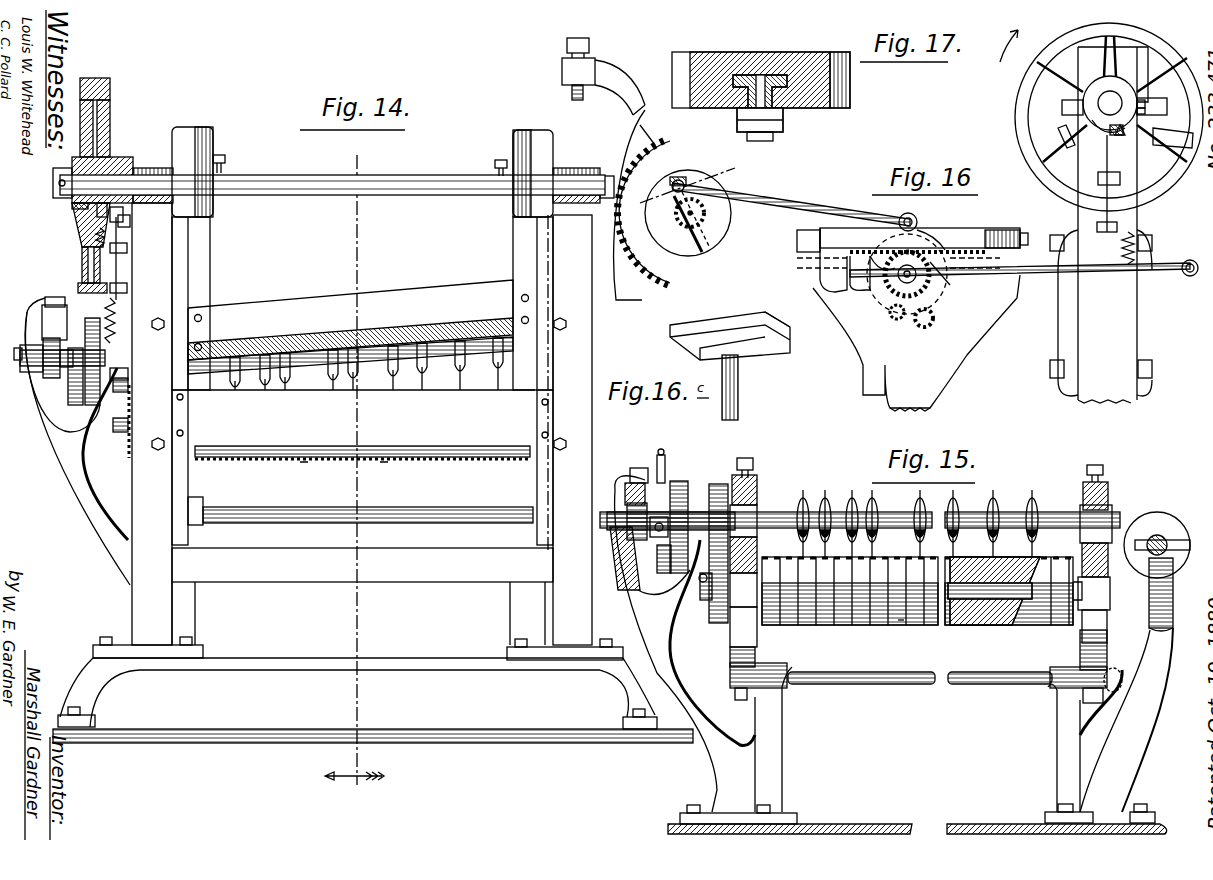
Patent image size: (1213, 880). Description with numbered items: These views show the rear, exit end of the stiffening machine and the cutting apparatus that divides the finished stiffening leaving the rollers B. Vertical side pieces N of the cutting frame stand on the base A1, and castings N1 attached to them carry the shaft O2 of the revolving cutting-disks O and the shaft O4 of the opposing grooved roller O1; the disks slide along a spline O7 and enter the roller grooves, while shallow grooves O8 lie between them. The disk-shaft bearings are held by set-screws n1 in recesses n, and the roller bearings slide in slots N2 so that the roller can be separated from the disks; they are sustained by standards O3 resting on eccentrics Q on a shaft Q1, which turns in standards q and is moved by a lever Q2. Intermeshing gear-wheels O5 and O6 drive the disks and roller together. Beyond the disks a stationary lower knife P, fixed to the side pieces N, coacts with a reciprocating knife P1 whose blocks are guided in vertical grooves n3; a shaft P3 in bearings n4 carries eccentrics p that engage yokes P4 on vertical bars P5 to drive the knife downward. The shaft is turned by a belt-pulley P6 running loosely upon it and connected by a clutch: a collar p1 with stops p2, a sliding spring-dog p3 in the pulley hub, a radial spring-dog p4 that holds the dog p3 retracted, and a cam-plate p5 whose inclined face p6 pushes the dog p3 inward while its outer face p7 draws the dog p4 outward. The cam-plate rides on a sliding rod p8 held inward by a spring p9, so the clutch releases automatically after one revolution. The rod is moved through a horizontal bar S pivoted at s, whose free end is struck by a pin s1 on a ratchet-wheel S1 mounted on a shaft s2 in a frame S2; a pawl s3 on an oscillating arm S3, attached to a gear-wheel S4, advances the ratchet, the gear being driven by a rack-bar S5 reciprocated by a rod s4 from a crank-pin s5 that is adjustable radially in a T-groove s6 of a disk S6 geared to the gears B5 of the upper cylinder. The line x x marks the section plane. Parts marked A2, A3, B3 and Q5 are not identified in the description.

In FIG. 14, the lower knife P is at (361, 367).
In FIG. 14, the reciprocating knife P1 is at (350, 320).
In FIG. 14, the shaft P3 is at (303, 185).
In FIG. 14, the yokes P4 is at (182, 138).
In FIG. 14, the vertical bars P5 is at (186, 256).
In FIG. 14, the belt-pulley P6 is at (108, 114).
In FIG. 17, the belt-pulley P6 is at (1012, 104).
In FIG. 14, the eccentrics p is at (214, 156).
In FIG. 14, the collar p1 is at (122, 165).
In FIG. 16C, the collar p1 is at (744, 352).
In FIG. 17, the collar p1 is at (1072, 112).
In FIG. 17, the stops p2 is at (1082, 142).
In FIG. 14, the sliding spring-dog p3 is at (72, 205).
In FIG. 17, the sliding spring-dog p3 is at (1146, 103).
In FIG. 14, the radially-movable spring-dog p4 is at (97, 215).
In FIG. 17, the radially-movable spring-dog p4 is at (1150, 113).
In FIG. 14, the cam-plate p5 is at (125, 213).
In FIG. 16C, the cam-plate p5 is at (781, 356).
In FIG. 17, the cam-plate p5 is at (1101, 142).
In FIG. 14, the laterally-inclined cam-face p6 is at (98, 229).
In FIG. 16C, the laterally-inclined cam-face p6 is at (717, 328).
In FIG. 17, the laterally-inclined cam-face p6 is at (1125, 152).
In FIG. 14, the outer inclined cam-face p7 is at (128, 225).
In FIG. 17, the outer inclined cam-face p7 is at (1142, 125).
In FIG. 14, the sliding rod p8 is at (92, 263).
In FIG. 16C, the sliding rod p8 is at (740, 404).
In FIG. 17, the sliding rod p8 is at (1110, 115).
In FIG. 14, the spring p9 is at (121, 318).
In FIG. 17, the spring p9 is at (1132, 255).
In FIG. 14, the vertical side pieces N is at (362, 424).
In FIG. 17, the vertical side pieces N is at (1145, 173).
In FIG. 15, the side castings N1 is at (757, 499).
In FIG. 16, the slots N2 is at (928, 320).
In FIG. 16, the recesses n is at (867, 255).
In FIG. 15, the set-screws n1 is at (745, 458).
In FIG. 14, the vertical grooves n3 is at (140, 378).
In FIG. 14, the bearings n4 is at (148, 172).
In FIG. 14, the cutting-disks O is at (327, 381).
In FIG. 15, the cutting-disks O is at (965, 547).
In FIG. 14, the grooved roller O1 is at (518, 458).
In FIG. 15, the grooved roller O1 is at (921, 610).
In FIG. 14, the disk shaft O2 is at (442, 354).
In FIG. 15, the disk shaft O2 is at (1003, 522).
In FIG. 14, the standards O3 is at (114, 444).
In FIG. 15, the standards O3 is at (1160, 540).
In FIG. 15, the roller shaft O4 is at (780, 519).
In FIG. 15, the gear-wheel O5 is at (860, 640).
In FIG. 14, the gear-wheel O6 is at (394, 463).
In FIG. 15, the gear-wheel O6 is at (960, 628).
In FIG. 14, the spline O7 is at (488, 346).
In FIG. 15, the spline O7 is at (877, 521).
In FIG. 15, the shallow grooves O8 is at (990, 622).
In FIG. 15, the eccentrics Q is at (735, 657).
In FIG. 14, the eccentric shaft Q1 is at (274, 512).
In FIG. 15, the eccentric shaft Q1 is at (898, 676).
In FIG. 15, the actuating-lever Q2 is at (1123, 662).
In FIG. 15, the gear wheel Q5 is at (720, 488).
In FIG. 14, the standards q is at (358, 621).
In FIG. 15, the standards q is at (926, 726).
In FIG. 14, the base A1 is at (295, 665).
In FIG. 15, the base A1 is at (917, 816).
In FIG. 14, the pedestal A2 is at (96, 700).
In FIG. 14, the curved arm A3 is at (613, 95).
In FIG. 14, the rollers B is at (627, 240).
In FIG. 14, the bolt B3 is at (590, 50).
In FIG. 14, the gears B5 is at (645, 158).
In FIG. 14, the pivoted bar S is at (690, 213).
In FIG. 17, the pivoted bar S is at (1020, 281).
In FIG. 15, the pivoted bar S is at (665, 535).
In FIG. 14, the ratchet-wheel S1 is at (92, 318).
In FIG. 16, the ratchet-wheel S1 is at (905, 274).
In FIG. 15, the ratchet-wheel S1 is at (680, 481).
In FIG. 14, the frame S2 is at (77, 441).
In FIG. 16, the frame S2 is at (907, 287).
In FIG. 15, the frame S2 is at (682, 651).
In FIG. 14, the oscillating arm S3 is at (66, 387).
In FIG. 16, the oscillating arm S3 is at (928, 312).
In FIG. 15, the oscillating arm S3 is at (662, 572).
In FIG. 14, the gear-wheel S4 is at (806, 207).
In FIG. 16, the gear-wheel S4 is at (908, 265).
In FIG. 15, the gear-wheel S4 is at (630, 498).
In FIG. 14, the rack-bar S5 is at (684, 165).
In FIG. 16, the rack-bar S5 is at (807, 253).
In FIG. 15, the rack-bar S5 is at (637, 470).
In FIG. 16, the rotating disk S6 is at (761, 66).
In FIG. 14, the pivot s is at (66, 343).
In FIG. 17, the pivot s is at (1190, 260).
In FIG. 14, the pin s1 is at (130, 379).
In FIG. 16, the pin s1 is at (944, 279).
In FIG. 14, the ratchet shaft s2 is at (38, 358).
In FIG. 16, the ratchet shaft s2 is at (890, 298).
In FIG. 15, the ratchet shaft s2 is at (690, 510).
In FIG. 14, the pawl s3 is at (88, 402).
In FIG. 16, the pawl s3 is at (898, 320).
In FIG. 15, the pawl s3 is at (673, 568).
In FIG. 14, the rod s4 is at (12, 348).
In FIG. 16, the rod s4 is at (738, 122).
In FIG. 15, the rod s4 is at (660, 453).
In FIG. 16, the crank-pin s5 is at (760, 142).
In FIG. 14, the T-groove s6 is at (696, 254).
In FIG. 16, the T-groove s6 is at (763, 78).
In FIG. 14, the section line x is at (531, 472).